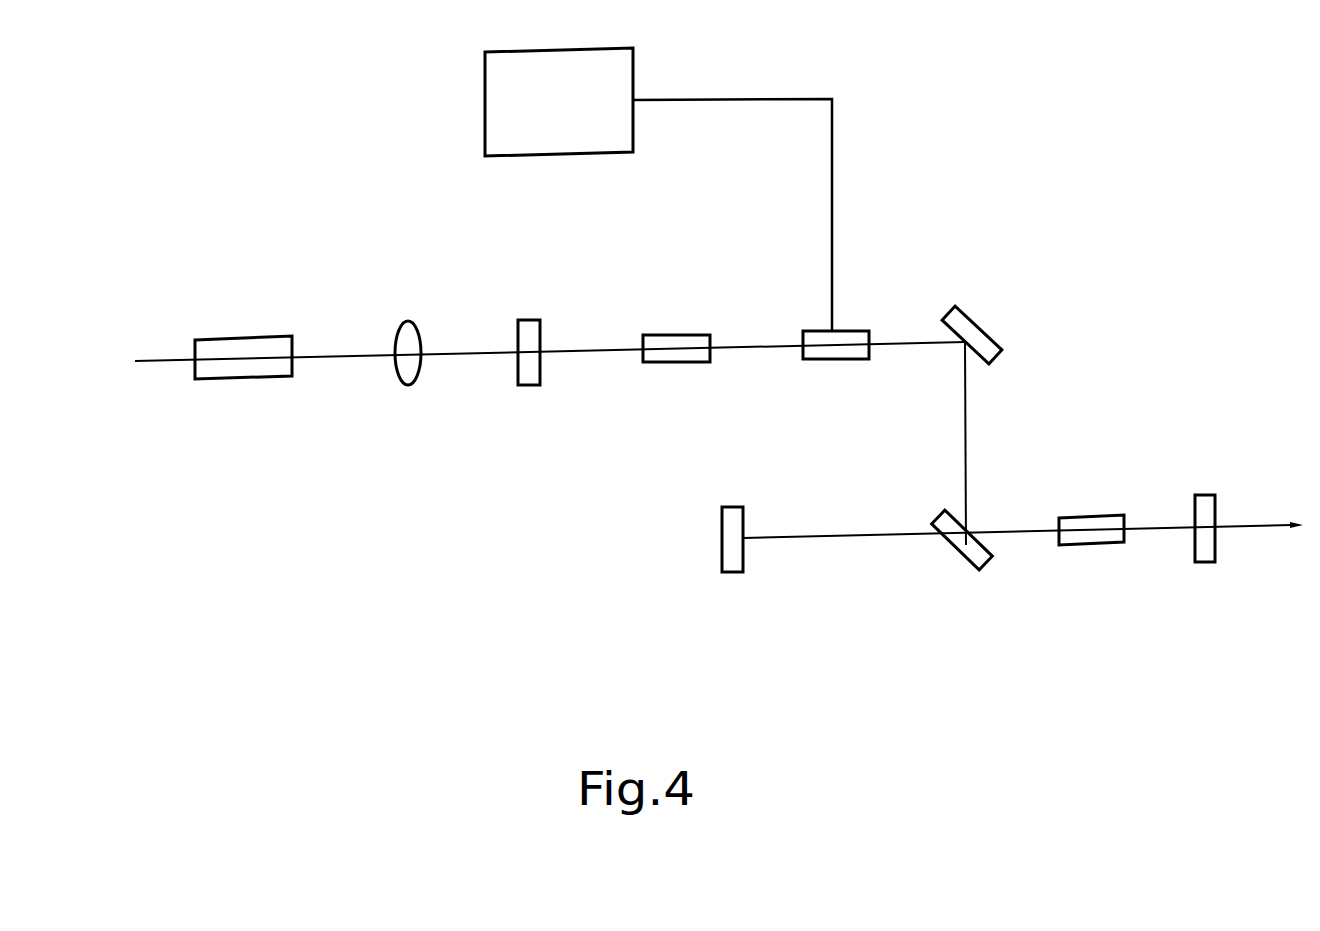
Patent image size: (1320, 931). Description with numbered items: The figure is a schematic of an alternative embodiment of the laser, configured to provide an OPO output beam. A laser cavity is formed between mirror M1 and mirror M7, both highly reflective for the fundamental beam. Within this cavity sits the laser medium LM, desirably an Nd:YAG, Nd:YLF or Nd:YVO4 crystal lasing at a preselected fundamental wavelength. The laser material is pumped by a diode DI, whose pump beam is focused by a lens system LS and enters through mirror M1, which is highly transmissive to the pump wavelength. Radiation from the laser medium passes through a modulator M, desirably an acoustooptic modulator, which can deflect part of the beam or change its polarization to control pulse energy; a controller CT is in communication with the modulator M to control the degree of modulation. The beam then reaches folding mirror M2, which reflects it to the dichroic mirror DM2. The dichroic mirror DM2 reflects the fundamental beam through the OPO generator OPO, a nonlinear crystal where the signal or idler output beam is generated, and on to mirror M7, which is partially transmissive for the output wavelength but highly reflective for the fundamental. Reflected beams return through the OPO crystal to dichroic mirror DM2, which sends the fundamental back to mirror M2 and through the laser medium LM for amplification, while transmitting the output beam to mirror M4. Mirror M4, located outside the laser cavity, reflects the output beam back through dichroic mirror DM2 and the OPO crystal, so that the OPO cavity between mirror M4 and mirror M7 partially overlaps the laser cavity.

The controller CT is at (658, 189).
The diode DI is at (243, 329).
The lens system LS is at (412, 331).
The mirror M1 is at (527, 330).
The laser medium LM is at (676, 316).
The modulator M is at (836, 369).
The folding mirror M2 is at (984, 325).
The mirror M4 is at (738, 566).
The dichroic mirror DM2 is at (961, 567).
The OPO generator OPO is at (1090, 567).
The mirror M7 is at (1210, 557).